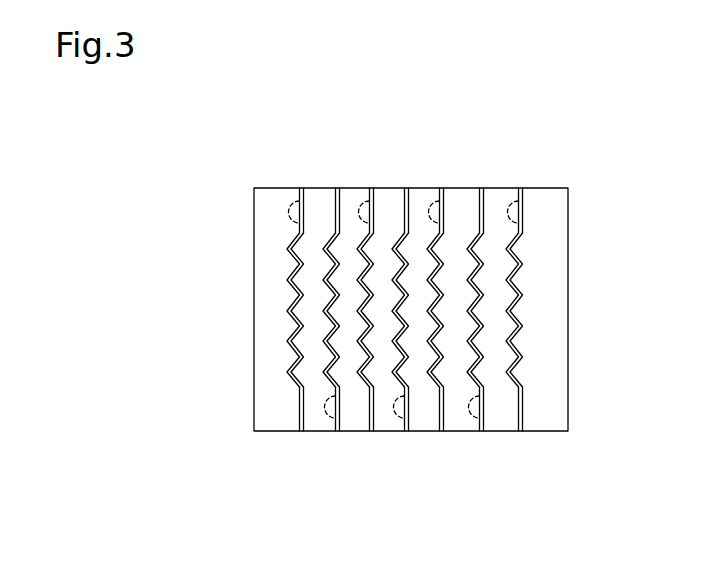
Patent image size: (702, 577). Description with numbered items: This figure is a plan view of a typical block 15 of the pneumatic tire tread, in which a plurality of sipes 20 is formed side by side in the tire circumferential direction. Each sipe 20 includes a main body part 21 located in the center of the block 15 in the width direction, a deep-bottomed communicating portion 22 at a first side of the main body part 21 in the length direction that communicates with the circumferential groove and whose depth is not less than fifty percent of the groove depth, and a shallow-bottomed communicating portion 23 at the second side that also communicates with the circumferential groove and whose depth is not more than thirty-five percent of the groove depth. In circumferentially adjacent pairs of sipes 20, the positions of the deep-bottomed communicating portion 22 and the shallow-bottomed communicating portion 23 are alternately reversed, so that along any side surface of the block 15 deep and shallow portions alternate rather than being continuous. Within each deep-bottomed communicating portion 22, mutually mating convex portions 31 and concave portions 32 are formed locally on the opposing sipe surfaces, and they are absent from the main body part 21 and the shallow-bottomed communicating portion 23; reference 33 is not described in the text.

The block 15 is at (545, 198).
The sipe 20 is at (404, 329).
The main body part 21 is at (322, 353).
The deep-bottomed communicating portion 22 is at (335, 329).
The shallow-bottomed communicating portion 23 is at (317, 383).
The convex portion 31 is at (305, 210).
The concave portion 32 is at (289, 212).
The second straight line portion 33 is at (336, 189).